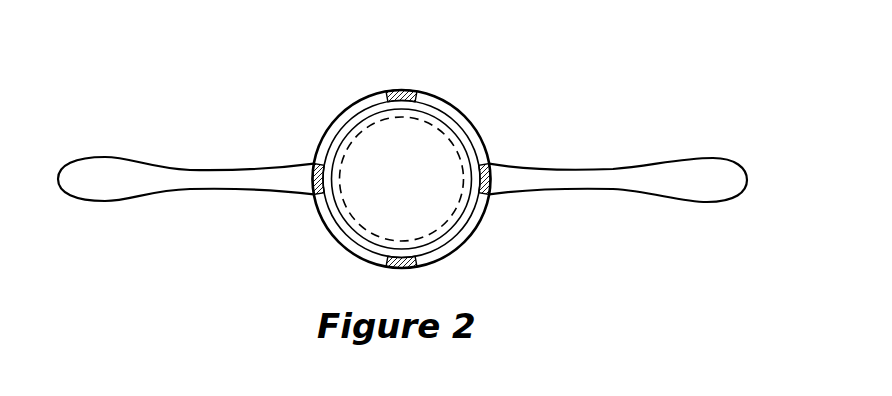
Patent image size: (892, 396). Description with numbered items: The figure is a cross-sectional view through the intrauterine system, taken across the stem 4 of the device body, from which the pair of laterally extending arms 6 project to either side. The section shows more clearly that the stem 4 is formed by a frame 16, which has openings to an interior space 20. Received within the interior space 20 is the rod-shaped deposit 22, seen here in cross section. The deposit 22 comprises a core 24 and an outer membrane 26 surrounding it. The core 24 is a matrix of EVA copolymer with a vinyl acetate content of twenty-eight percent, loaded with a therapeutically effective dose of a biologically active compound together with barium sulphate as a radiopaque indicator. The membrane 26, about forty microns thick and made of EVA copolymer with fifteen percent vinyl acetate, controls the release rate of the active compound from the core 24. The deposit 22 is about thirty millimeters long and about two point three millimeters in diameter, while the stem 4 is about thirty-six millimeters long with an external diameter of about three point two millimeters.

The stem 4 is at (470, 125).
The laterally extending arms 6 is at (690, 174).
The frame 16 is at (410, 90).
The interior space 20 is at (475, 210).
The deposit 22 is at (343, 235).
The core 24 is at (373, 143).
The outer membrane 26 is at (449, 233).